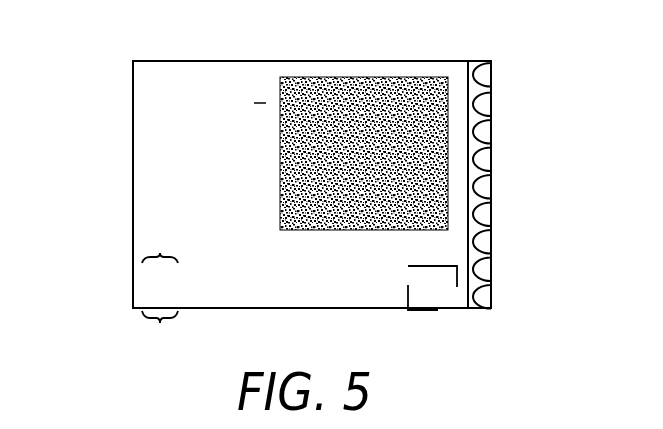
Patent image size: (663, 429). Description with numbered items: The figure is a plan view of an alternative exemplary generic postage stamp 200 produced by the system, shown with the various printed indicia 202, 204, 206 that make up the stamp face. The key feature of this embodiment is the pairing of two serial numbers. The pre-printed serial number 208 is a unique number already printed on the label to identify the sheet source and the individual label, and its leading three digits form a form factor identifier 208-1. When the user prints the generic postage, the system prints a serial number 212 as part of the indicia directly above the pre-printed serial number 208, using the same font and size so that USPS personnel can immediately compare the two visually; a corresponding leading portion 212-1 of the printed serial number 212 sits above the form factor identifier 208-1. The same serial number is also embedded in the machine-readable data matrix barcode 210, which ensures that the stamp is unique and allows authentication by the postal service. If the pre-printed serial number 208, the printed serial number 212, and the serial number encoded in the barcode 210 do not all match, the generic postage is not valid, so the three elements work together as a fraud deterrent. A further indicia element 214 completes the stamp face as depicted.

The postage indicium (stamp) 200 is at (222, 61).
The mail class / postage designation 202 is at (172, 158).
The postage amount 204 is at (177, 142).
The origin location 206 is at (148, 180).
The pre-printed serial number 208 is at (140, 296).
The form factor identifier 208-1 is at (162, 324).
The machine-readable data matrix barcode 210 is at (363, 77).
The printed serial number 212 is at (140, 275).
The portion of first code line 212-1 is at (159, 254).
The vendor logo (stamps.com) 214 is at (438, 310).